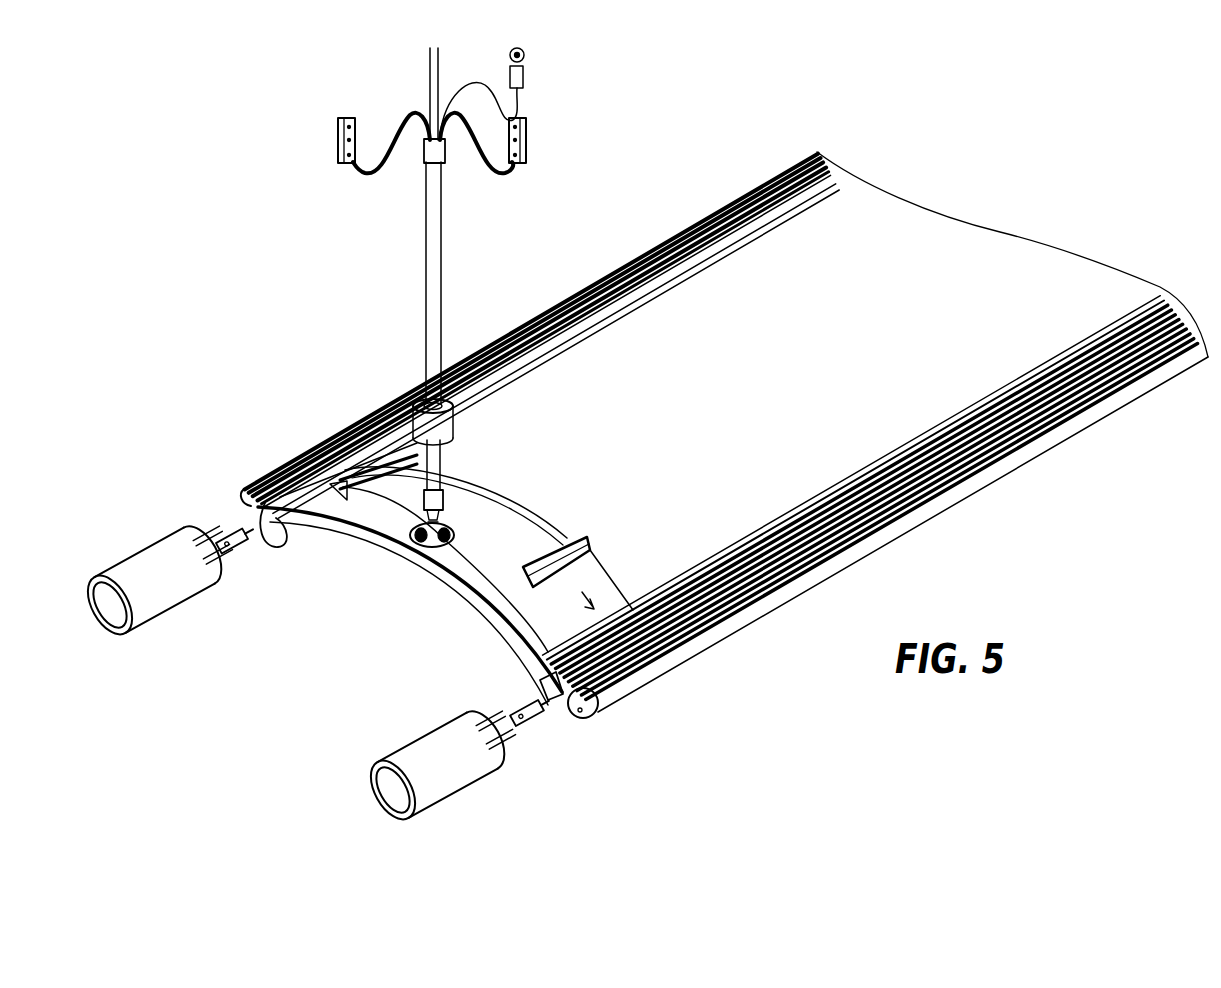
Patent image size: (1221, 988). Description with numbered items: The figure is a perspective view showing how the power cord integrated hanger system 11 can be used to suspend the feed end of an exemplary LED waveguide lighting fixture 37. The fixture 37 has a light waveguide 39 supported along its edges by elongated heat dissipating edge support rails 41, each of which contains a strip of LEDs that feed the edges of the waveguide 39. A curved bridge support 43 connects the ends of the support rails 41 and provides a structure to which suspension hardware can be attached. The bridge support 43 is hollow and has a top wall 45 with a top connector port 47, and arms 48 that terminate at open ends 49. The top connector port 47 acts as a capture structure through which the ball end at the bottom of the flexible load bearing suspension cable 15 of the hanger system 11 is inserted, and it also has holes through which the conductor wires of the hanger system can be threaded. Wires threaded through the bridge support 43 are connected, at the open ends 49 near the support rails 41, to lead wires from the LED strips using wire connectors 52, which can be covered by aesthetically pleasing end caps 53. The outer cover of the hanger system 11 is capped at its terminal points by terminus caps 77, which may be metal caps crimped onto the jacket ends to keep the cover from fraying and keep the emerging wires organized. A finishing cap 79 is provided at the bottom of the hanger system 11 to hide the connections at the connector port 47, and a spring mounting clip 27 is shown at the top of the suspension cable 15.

The power cord integrated hanger system 11 is at (455, 256).
The suspension cable 15 is at (430, 73).
The spring mounting clip 27 is at (400, 130).
The LED waveguide lighting fixture 37 is at (334, 381).
The light waveguide 39 is at (1040, 262).
The heat dissipating edge support rails 41 is at (703, 222).
The bridge support 43 is at (355, 523).
The top wall 45 is at (533, 607).
The top connector port 47 is at (422, 553).
The arms 48 is at (352, 464).
The open ends 49 is at (272, 522).
The wire connectors 52 is at (237, 553).
The end caps 53 is at (152, 560).
The terminus caps 77 is at (427, 150).
The finishing cap 79 is at (447, 428).